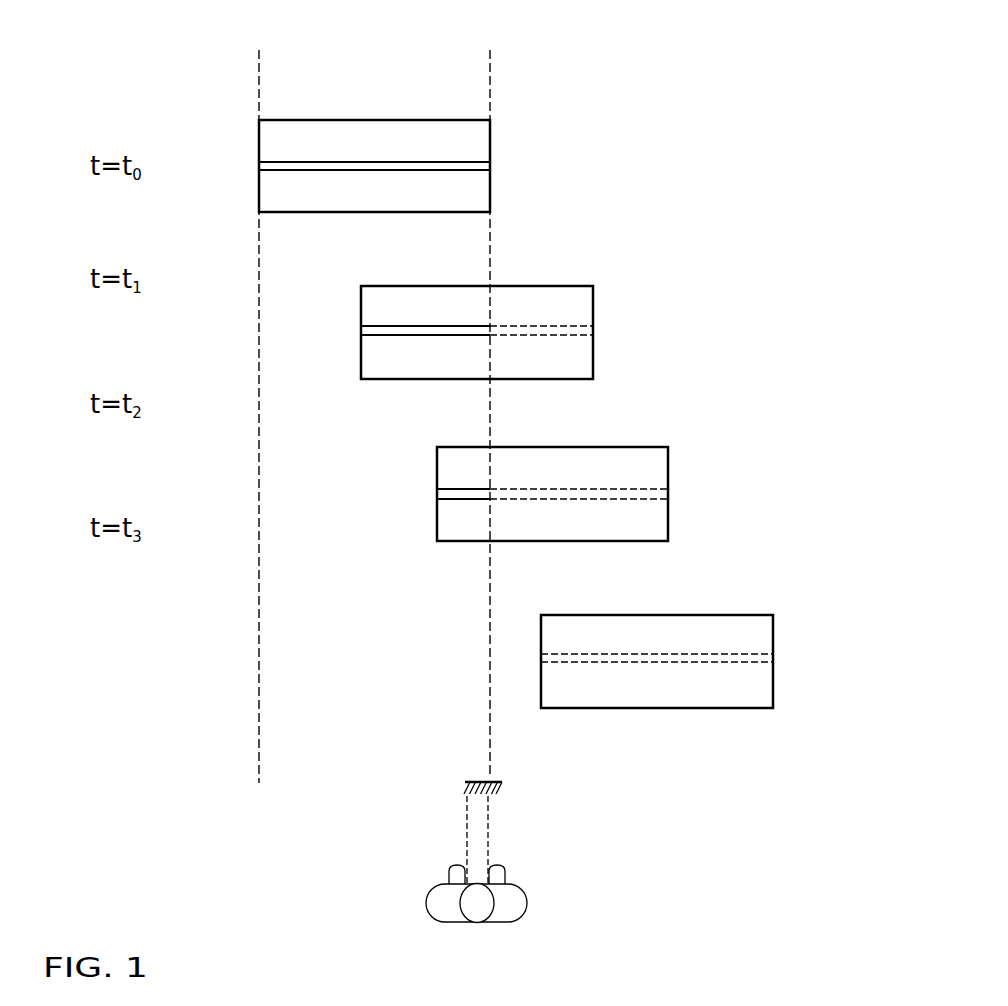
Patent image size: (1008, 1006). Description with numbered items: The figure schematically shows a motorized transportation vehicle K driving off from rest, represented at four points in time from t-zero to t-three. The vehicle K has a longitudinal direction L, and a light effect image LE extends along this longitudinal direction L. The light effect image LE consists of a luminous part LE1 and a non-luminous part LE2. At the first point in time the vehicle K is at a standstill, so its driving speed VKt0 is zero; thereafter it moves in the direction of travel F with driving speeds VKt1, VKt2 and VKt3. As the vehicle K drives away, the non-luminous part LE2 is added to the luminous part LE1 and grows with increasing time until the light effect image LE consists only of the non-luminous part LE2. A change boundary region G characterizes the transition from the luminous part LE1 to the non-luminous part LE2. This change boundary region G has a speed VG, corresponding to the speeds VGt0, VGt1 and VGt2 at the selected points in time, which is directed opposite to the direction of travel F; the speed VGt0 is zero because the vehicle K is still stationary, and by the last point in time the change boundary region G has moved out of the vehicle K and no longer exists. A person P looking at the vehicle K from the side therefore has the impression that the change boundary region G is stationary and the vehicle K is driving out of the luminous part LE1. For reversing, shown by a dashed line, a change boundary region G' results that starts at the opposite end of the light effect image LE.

The change boundary region G' is at (238, 398).
The change boundary region G is at (517, 397).
The motorized transportation vehicle K is at (259, 125).
The light effect image LE is at (488, 173).
The luminous part of the light effect image LE1 is at (303, 166).
The non-luminous part of the light effect image LE2 is at (566, 329).
The longitudinal direction L is at (396, 80).
The direction of travel F is at (215, 165).
The speed of the change boundary region at time t0 VGt0 is at (458, 149).
The speed of the change boundary region at time t1 VGt1 is at (468, 314).
The speed of the change boundary region at time t2 VGt2 is at (503, 475).
The driving speed of the vehicle at time t0 VKt0 is at (532, 164).
The driving speed of the vehicle at time t1 VKt1 is at (638, 333).
The driving speed of the vehicle at time t2 VKt2 is at (720, 493).
The driving speed of the vehicle at time t3 VKt3 is at (847, 658).
The speed of the change boundary region VG is at (468, 751).
The person P is at (433, 899).